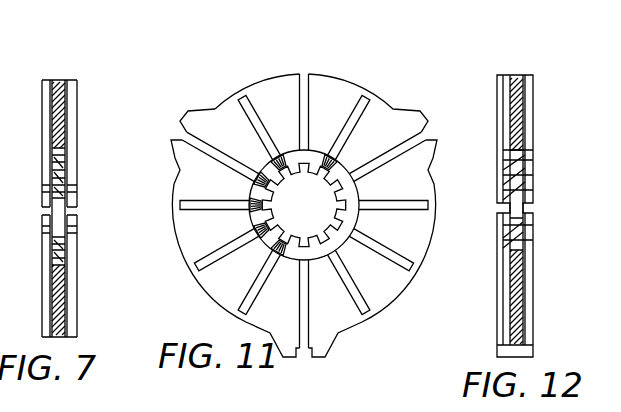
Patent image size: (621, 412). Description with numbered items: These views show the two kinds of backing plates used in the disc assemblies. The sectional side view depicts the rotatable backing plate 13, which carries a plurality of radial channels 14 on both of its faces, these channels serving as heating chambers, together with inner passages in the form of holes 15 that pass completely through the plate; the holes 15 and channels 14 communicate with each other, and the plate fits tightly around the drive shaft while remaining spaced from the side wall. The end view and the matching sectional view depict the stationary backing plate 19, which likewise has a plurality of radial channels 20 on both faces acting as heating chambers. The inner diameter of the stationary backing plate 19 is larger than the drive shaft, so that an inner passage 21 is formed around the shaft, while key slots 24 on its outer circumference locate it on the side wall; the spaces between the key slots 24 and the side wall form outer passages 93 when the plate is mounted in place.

In FIG. 7, the rotatable backing plate 13 is at (56, 78).
In FIG. 7, the radial channels 14 is at (45, 79).
In FIG. 7, the holes 15 is at (89, 200).
In FIG. 11, the stationary backing plate 19 is at (337, 96).
In FIG. 12, the stationary backing plate 19 is at (512, 75).
In FIG. 11, the radial channels 20 is at (242, 100).
In FIG. 12, the radial channels 20 is at (498, 76).
In FIG. 11, the inner passage 21 is at (330, 215).
In FIG. 12, the inner passage 21 is at (503, 241).
In FIG. 11, the key slots 24 is at (170, 138).
In FIG. 11, the outer passages 93 is at (160, 192).